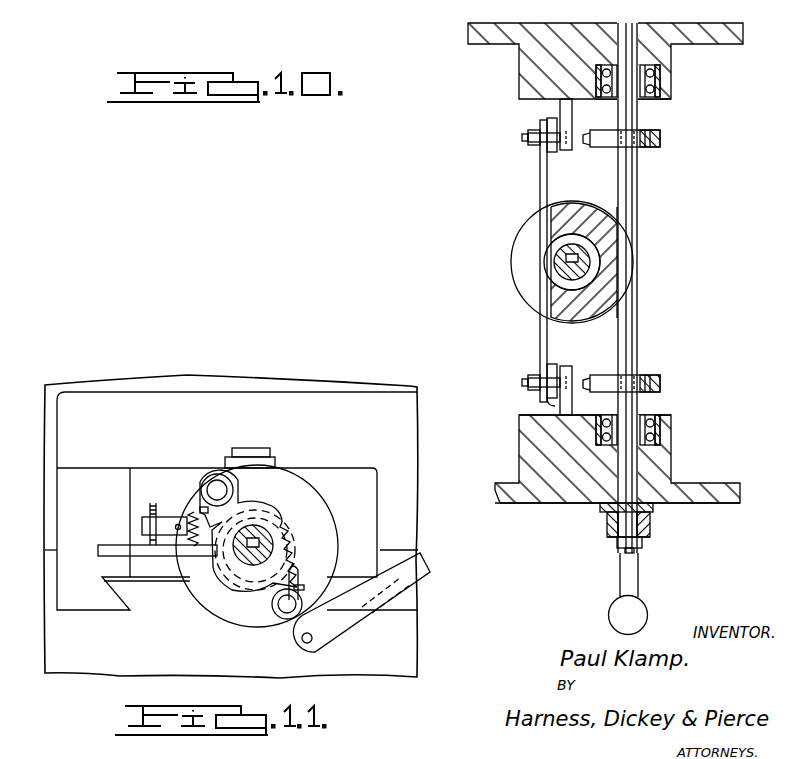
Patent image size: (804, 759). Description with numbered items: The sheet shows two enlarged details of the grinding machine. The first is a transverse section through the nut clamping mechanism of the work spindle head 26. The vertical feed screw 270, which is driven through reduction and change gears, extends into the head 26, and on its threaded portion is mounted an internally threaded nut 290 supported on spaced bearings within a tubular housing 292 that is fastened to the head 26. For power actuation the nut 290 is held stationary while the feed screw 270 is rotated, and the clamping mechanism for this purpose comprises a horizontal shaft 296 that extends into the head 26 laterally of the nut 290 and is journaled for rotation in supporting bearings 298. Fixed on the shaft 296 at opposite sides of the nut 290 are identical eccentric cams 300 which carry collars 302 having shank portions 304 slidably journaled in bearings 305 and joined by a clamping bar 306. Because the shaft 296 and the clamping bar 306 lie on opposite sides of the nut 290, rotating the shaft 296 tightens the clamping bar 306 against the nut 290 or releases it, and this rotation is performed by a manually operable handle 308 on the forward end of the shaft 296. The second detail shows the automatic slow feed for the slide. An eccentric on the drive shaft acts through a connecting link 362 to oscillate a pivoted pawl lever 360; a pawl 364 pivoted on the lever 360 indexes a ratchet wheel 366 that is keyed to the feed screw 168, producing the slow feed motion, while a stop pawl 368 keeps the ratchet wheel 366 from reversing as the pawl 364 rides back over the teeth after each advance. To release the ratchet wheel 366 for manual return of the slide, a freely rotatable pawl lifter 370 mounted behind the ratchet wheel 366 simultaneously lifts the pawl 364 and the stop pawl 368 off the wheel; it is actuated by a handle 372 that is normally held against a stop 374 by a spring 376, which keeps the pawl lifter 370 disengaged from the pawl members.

In FIG. 10, the work spindle head 26 is at (500, 503).
In FIG. 11, the feed screw 168 is at (258, 538).
In FIG. 10, the vertical feed screw 270 is at (578, 263).
In FIG. 10, the nut 290 is at (546, 252).
In FIG. 10, the tubular housing 292 is at (529, 286).
In FIG. 10, the horizontal shaft 296 is at (636, 192).
In FIG. 10, the supporting bearings 298 is at (661, 84).
In FIG. 10, the eccentric cams 300 is at (612, 118).
In FIG. 10, the collars 302 is at (661, 139).
In FIG. 10, the shank portions 304 is at (543, 123).
In FIG. 10, the bearings 305 is at (563, 152).
In FIG. 10, the clamping bar 306 is at (542, 176).
In FIG. 10, the manually operable handle 308 is at (642, 525).
In FIG. 11, the pawl lever 360 is at (299, 632).
In FIG. 11, the connecting link 362 is at (348, 618).
In FIG. 11, the pawl 364 is at (301, 580).
In FIG. 11, the ratchet wheel 366 is at (298, 546).
In FIG. 11, the stop pawl 368 is at (194, 505).
In FIG. 11, the pawl lifter 370 is at (230, 517).
In FIG. 11, the handle 372 is at (108, 544).
In FIG. 11, the stop 374 is at (150, 507).
In FIG. 11, the spring 376 is at (189, 514).